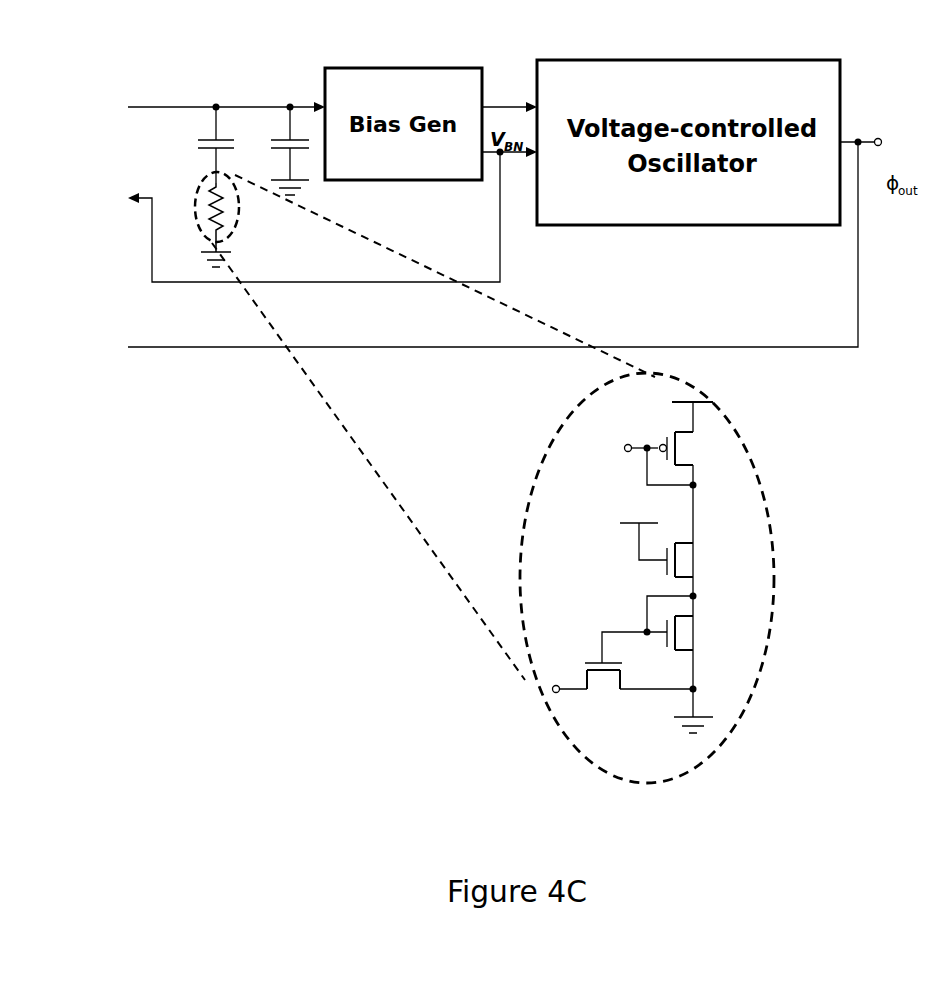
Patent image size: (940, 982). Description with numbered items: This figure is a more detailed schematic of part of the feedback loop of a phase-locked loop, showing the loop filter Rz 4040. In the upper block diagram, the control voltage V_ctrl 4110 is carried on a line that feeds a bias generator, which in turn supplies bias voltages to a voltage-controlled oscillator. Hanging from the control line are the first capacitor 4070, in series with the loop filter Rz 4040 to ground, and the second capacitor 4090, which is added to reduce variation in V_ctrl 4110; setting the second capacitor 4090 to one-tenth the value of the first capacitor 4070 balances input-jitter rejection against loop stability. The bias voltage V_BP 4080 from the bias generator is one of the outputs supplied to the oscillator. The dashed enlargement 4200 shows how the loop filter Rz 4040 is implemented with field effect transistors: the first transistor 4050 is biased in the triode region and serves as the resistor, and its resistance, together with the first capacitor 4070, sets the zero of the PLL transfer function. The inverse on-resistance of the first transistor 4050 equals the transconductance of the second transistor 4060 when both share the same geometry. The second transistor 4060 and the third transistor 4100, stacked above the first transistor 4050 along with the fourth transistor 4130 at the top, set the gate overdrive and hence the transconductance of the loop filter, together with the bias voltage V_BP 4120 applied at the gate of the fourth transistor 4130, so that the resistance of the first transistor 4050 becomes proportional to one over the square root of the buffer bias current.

The control voltage V_ctrl 4110 is at (178, 64).
The capacitor C1 4070 is at (165, 158).
The second capacitor C2 4090 is at (255, 140).
The loop filter Rz 4040 is at (248, 228).
The bias voltage V_BP 4080 is at (495, 73).
The enlarged transistor circuit 4200 is at (770, 436).
The bias voltage V_BP 4120 is at (572, 437).
The transistor M4 4130 is at (672, 432).
The transistor M3 4100 is at (748, 550).
The transistor M2 4060 is at (748, 624).
The transistor M1 4050 is at (610, 720).